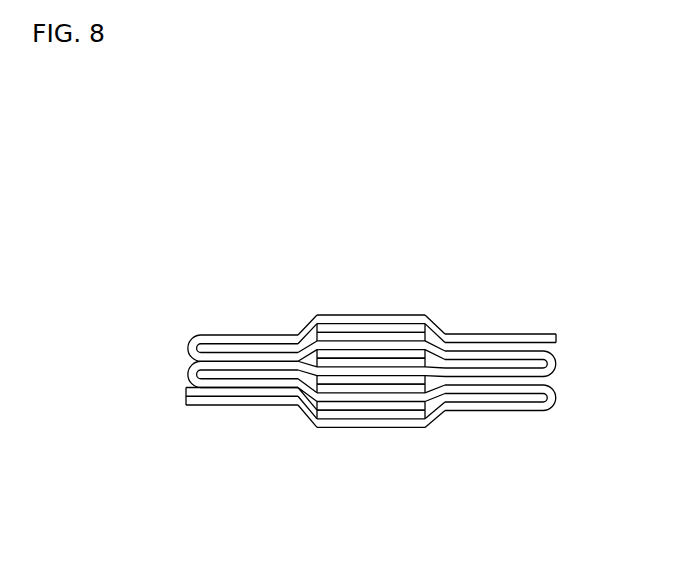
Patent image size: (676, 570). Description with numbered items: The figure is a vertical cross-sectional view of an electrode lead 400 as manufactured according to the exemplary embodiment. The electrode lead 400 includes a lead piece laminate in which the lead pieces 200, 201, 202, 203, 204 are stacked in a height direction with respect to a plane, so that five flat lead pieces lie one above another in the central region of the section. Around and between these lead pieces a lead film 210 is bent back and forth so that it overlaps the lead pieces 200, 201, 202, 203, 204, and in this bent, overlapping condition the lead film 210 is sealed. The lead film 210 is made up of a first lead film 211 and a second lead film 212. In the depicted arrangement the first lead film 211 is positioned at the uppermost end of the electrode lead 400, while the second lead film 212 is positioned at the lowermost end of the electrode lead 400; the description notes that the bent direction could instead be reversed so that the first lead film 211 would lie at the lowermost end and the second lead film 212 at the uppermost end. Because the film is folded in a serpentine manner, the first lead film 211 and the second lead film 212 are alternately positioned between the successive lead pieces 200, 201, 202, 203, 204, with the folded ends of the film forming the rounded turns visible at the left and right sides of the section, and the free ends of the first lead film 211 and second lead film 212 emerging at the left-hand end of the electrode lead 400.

The electrode lead 400 is at (376, 204).
The lead piece 200 is at (336, 420).
The lead piece 201 is at (301, 415).
The lead piece 202 is at (366, 372).
The lead piece 203 is at (383, 350).
The lead piece 204 is at (412, 325).
The lead film 210 is at (86, 352).
The first lead film 211 is at (186, 392).
The second lead film 212 is at (186, 405).